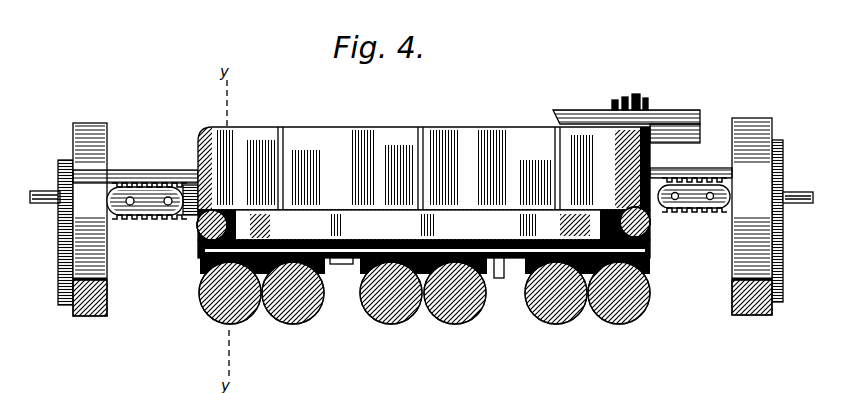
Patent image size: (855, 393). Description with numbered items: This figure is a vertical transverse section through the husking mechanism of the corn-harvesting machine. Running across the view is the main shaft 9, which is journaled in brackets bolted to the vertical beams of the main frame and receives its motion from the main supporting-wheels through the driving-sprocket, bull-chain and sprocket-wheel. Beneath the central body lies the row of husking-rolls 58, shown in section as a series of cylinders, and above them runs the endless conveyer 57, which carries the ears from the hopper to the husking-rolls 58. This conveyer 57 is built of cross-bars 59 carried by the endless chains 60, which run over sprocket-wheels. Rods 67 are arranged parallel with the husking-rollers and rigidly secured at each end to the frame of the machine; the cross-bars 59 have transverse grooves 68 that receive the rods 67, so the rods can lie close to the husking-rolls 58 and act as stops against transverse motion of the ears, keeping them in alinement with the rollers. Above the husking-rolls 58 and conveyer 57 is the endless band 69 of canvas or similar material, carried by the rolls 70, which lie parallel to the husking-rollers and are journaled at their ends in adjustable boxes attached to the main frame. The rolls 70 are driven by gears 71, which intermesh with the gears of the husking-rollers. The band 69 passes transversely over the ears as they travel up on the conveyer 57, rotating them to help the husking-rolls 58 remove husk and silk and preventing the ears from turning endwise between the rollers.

The main shaft 9 is at (46, 203).
The endless conveyer 57 is at (424, 261).
The husking-rolls 58 is at (200, 268).
The cross-bars 59 is at (355, 280).
The endless chains 60 is at (499, 278).
The rods 67 is at (199, 253).
The transverse grooves 68 is at (519, 305).
The endless band 69 is at (323, 208).
The rolls 70 is at (200, 232).
The gears 71 is at (636, 96).